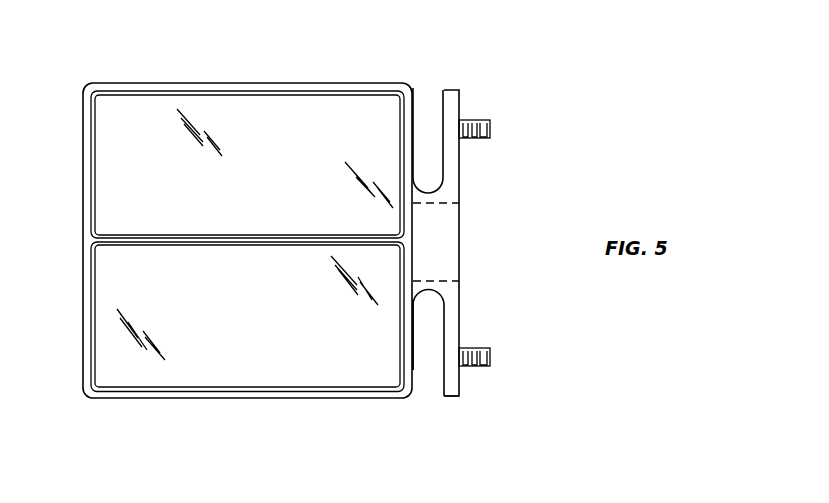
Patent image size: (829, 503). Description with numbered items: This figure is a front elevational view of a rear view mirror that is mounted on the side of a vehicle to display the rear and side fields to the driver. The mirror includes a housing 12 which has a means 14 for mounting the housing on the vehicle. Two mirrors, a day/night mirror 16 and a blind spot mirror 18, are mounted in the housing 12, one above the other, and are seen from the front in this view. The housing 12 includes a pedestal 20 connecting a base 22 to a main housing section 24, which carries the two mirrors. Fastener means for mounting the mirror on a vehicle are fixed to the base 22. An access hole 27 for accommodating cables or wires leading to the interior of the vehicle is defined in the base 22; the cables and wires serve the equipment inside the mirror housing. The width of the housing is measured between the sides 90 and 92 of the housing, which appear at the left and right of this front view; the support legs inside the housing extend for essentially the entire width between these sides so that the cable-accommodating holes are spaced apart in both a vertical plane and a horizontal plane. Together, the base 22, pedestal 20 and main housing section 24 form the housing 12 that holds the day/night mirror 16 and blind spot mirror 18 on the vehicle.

The housing 12 is at (406, 82).
The means for mounting the housing 14 is at (462, 91).
The day/night mirror 16 is at (330, 120).
The blind spot mirror 18 is at (222, 350).
The pedestal 20 is at (430, 193).
The base 22 is at (455, 397).
The main housing section 24 is at (332, 398).
The access hole 27 is at (464, 239).
The side 90 is at (83, 368).
The side 92 is at (413, 368).